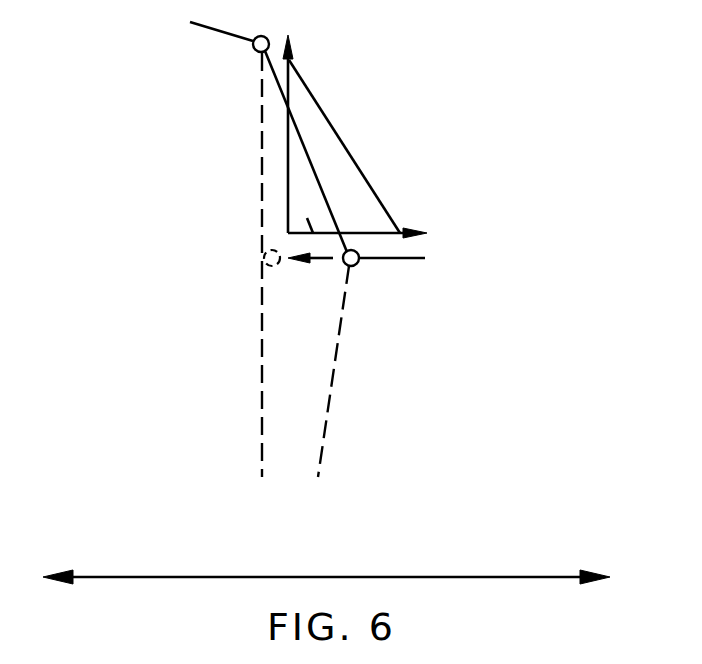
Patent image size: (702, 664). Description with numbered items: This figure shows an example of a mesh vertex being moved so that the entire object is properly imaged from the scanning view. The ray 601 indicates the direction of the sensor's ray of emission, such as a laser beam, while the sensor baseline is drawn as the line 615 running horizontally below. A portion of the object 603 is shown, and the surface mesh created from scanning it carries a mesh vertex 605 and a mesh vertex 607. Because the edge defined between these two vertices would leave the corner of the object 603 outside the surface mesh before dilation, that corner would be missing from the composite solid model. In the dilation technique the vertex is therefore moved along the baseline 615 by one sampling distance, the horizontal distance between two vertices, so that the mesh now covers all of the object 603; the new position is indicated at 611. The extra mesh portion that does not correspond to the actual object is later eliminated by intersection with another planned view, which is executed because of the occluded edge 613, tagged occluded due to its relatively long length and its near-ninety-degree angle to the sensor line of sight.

The ray 601 is at (328, 415).
The object 603 is at (307, 218).
The mesh vertex 605 is at (356, 264).
The mesh vertex 607 is at (251, 50).
The projected point 611 is at (264, 261).
The occluded edge 613 is at (258, 161).
The sensor baseline 615 is at (165, 577).